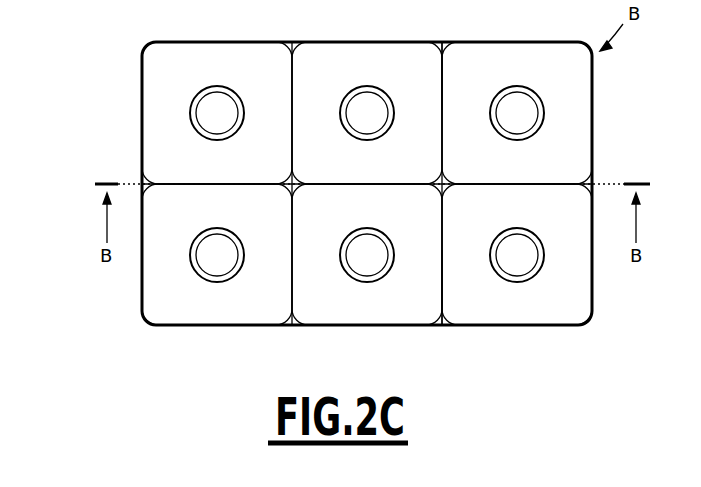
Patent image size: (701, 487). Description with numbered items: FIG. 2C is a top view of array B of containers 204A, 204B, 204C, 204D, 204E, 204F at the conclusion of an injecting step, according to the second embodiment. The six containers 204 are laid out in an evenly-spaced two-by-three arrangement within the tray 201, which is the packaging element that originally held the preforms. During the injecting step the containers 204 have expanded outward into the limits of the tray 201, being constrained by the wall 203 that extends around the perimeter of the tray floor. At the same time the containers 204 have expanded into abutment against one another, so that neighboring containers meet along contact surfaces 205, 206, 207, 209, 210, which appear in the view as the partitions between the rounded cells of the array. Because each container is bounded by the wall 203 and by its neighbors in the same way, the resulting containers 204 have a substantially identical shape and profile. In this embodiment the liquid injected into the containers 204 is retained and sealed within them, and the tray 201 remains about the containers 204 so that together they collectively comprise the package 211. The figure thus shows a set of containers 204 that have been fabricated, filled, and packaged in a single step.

The tray 201 is at (443, 107).
The wall 203 is at (439, 326).
The containers 204 is at (140, 330).
The container 204A is at (223, 320).
The container 204B is at (364, 320).
The container 204C is at (499, 320).
The container 204D is at (235, 48).
The container 204E is at (366, 48).
The container 204F is at (512, 48).
The contact surface 205 is at (213, 185).
The contact surface 206 is at (292, 252).
The contact surface 207 is at (441, 262).
The contact surface 209 is at (443, 42).
The contact surface 210 is at (293, 106).
The package 211 is at (582, 348).